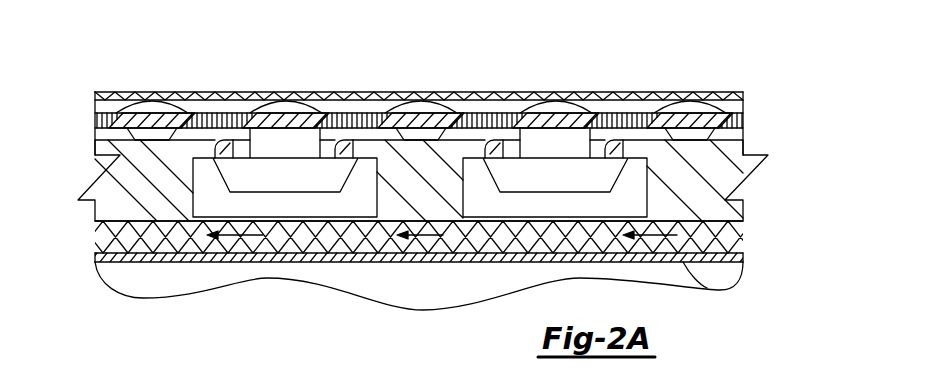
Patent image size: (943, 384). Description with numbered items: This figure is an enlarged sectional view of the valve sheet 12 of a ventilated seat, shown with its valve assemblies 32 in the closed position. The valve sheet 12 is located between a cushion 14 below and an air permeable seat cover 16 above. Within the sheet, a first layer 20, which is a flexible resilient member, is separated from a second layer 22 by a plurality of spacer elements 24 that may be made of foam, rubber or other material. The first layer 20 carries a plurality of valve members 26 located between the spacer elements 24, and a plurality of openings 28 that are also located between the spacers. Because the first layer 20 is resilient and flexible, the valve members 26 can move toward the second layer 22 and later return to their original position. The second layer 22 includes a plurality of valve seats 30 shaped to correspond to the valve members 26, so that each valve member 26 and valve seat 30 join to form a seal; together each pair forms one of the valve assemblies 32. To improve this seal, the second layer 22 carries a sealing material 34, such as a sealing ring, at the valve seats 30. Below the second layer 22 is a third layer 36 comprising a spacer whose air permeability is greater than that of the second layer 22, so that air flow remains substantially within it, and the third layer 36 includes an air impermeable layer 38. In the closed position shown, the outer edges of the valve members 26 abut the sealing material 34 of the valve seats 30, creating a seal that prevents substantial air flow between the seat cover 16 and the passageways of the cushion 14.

The valve sheet 12 is at (757, 100).
The cushion 14 is at (443, 289).
The air permeable seat cover 16 is at (638, 91).
The first layer 20 is at (95, 120).
The second layer 22 is at (112, 175).
The spacer elements 24 is at (160, 105).
The valve members 26 is at (275, 165).
The openings 28 is at (252, 118).
The valve seats 30 is at (207, 153).
The valve assemblies 32 is at (182, 200).
The sealing material 34 is at (343, 160).
The third layer 36 is at (733, 240).
The air impermeable layer 38 is at (730, 293).